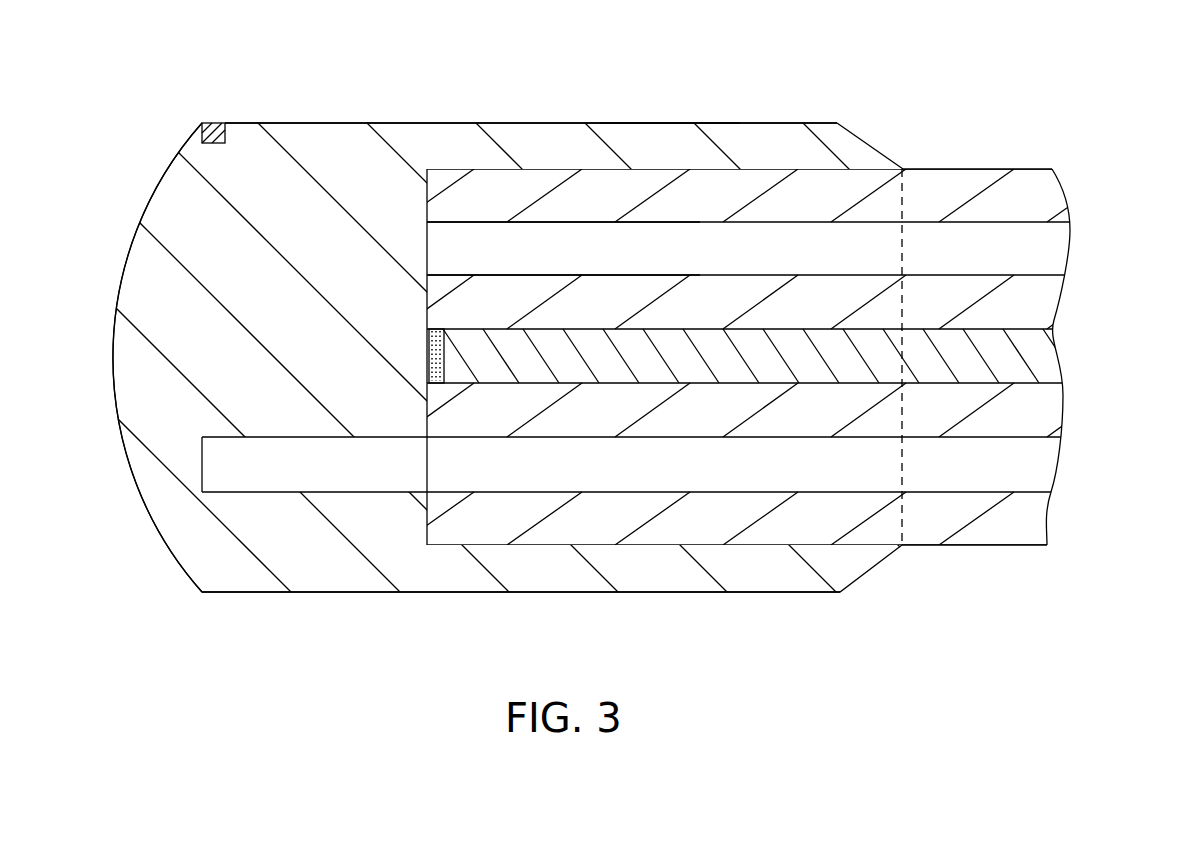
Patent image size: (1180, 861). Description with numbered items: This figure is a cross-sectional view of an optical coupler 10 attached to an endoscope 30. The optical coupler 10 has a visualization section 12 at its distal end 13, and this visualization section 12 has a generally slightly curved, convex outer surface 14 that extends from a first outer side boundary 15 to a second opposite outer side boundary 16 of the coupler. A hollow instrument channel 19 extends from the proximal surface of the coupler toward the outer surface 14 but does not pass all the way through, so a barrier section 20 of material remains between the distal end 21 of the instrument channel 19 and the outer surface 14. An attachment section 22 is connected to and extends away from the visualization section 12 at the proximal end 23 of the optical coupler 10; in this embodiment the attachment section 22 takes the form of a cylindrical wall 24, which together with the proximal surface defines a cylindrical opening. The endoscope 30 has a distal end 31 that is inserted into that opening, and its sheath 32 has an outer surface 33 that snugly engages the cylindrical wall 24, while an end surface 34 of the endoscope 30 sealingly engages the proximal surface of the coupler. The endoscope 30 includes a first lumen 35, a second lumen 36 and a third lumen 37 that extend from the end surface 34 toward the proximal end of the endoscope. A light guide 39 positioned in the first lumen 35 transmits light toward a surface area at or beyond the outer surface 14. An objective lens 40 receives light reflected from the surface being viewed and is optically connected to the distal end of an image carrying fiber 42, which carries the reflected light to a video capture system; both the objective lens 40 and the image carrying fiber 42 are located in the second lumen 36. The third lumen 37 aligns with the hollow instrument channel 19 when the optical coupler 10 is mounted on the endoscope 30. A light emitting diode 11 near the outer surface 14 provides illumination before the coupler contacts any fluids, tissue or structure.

The optical coupler 10 is at (508, 48).
The Light Emitting Diode (LED) 11 is at (208, 124).
The visualization section 12 is at (337, 158).
The distal end 13 is at (318, 605).
The outer surface 14 is at (153, 215).
The first outer side boundary 15 is at (232, 123).
The second opposite outer side boundary 16 is at (240, 592).
The hollow instrument channel 19 is at (370, 460).
The barrier section 20 is at (187, 542).
The distal end of instrument channel 21 is at (208, 465).
The attachment section 22 is at (520, 123).
The proximal end 23 is at (895, 130).
The cylindrical wall 24 is at (668, 135).
The endoscope 30 is at (1018, 153).
The distal end of endoscope 31 is at (440, 528).
The sheath 32 is at (1057, 190).
The outer surface of sheath 33 is at (935, 169).
The end surface 34 is at (422, 300).
The first lumen 35 is at (1077, 243).
The second lumen 36 is at (1066, 345).
The third lumen 37 is at (1062, 460).
The light guide 39 is at (788, 240).
The objective lens 40 is at (430, 350).
The image carrying fiber 42 is at (1043, 360).